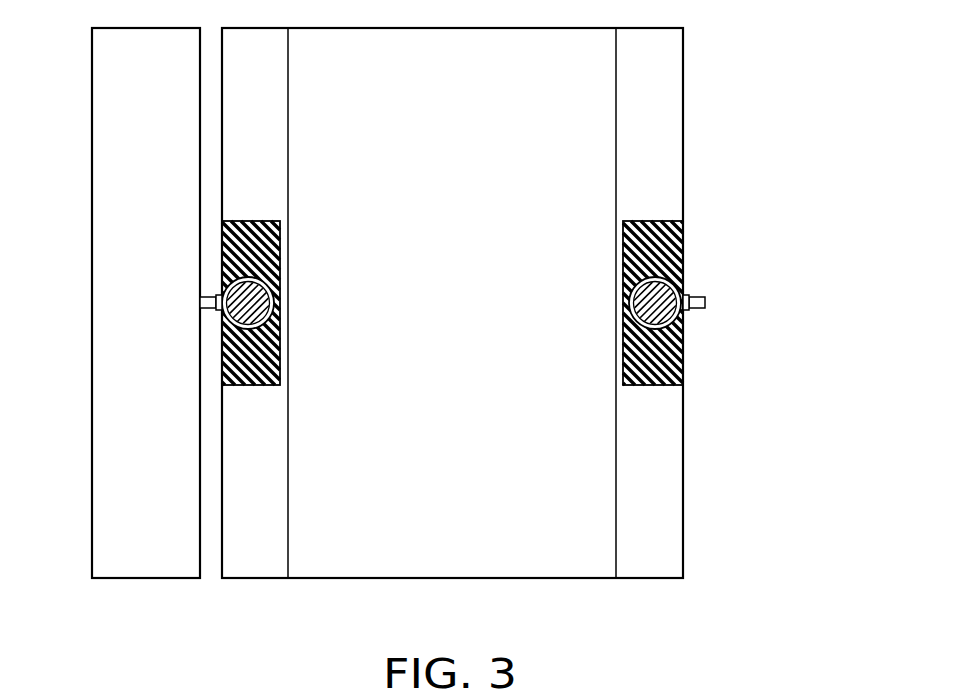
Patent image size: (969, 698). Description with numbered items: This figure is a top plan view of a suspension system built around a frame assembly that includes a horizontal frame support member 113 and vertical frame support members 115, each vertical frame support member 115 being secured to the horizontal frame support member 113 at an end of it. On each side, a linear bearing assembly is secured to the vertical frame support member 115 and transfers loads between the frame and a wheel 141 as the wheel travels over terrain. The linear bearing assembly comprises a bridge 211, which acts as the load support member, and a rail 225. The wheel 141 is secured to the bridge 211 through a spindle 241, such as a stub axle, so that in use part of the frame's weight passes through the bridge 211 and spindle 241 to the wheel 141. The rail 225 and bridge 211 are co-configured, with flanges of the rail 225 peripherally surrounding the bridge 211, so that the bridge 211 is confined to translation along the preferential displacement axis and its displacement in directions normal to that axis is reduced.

The horizontal frame support member 113 is at (326, 541).
The vertical frame support member 115 is at (253, 541).
The wheel 141 is at (100, 446).
The bridge 211 is at (232, 286).
The rail 225 is at (230, 374).
The spindle 241 is at (206, 308).